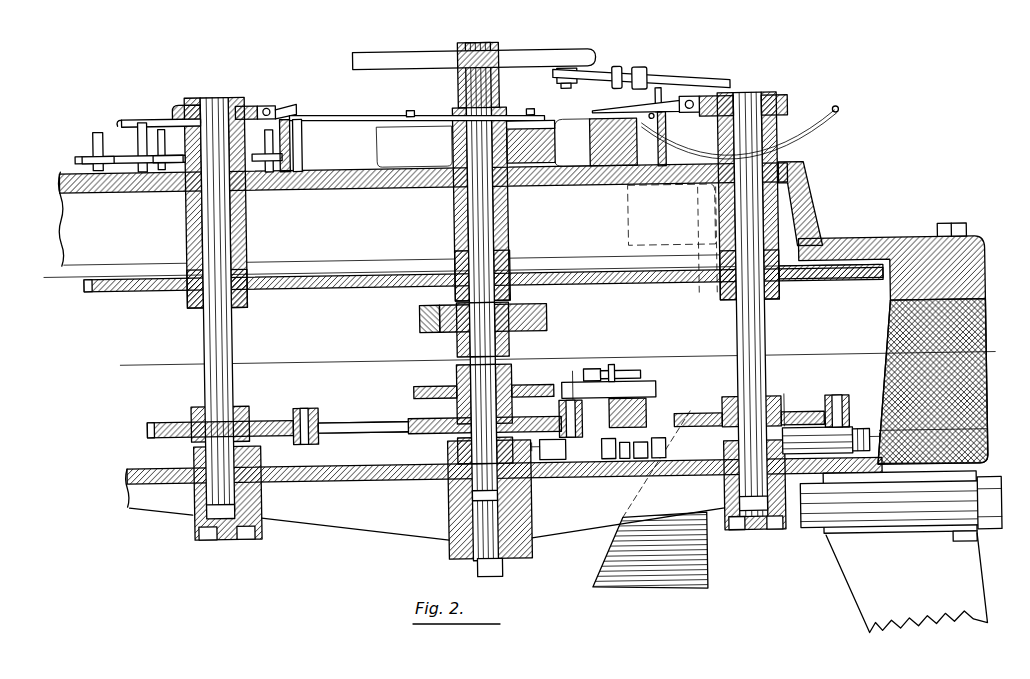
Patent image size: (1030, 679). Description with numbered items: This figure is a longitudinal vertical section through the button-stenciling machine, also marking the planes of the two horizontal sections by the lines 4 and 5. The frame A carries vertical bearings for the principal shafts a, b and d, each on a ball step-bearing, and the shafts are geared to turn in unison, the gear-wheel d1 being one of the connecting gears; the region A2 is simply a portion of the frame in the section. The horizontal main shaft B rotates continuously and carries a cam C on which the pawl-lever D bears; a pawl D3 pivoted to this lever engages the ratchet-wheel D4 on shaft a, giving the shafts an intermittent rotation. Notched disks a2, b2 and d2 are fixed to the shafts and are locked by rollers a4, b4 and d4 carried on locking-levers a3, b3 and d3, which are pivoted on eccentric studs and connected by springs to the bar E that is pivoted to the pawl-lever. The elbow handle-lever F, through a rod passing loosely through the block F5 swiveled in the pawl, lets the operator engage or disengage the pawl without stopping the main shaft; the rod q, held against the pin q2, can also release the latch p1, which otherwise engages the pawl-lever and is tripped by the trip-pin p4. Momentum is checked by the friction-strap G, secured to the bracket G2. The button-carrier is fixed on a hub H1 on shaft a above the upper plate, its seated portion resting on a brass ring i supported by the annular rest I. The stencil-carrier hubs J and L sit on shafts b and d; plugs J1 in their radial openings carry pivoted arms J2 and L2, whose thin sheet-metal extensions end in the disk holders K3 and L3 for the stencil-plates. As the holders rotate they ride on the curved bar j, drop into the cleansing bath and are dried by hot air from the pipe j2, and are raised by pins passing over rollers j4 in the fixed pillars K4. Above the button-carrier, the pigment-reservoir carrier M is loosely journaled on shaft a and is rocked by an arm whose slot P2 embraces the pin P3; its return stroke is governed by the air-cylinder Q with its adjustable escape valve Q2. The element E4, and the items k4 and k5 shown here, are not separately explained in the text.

The frame A is at (564, 351).
The housing A2 is at (423, 213).
The horizontal main shaft B is at (892, 545).
The cam C is at (703, 568).
The pawl-lever D is at (645, 400).
The pawl D3 is at (640, 383).
The ratchet-wheel D4 is at (484, 413).
The bar E is at (558, 449).
The lever pin E4 is at (591, 368).
The elbow handle-lever F is at (360, 421).
The block F5 is at (612, 366).
The friction-strap G is at (547, 318).
The bracket G2 is at (422, 312).
The hub H1 is at (531, 136).
The annular flange or rest I is at (593, 150).
The hub of stencil-carrier J is at (192, 90).
The plug J1 is at (250, 102).
The arm J2 is at (290, 103).
The disk holder K3 is at (340, 113).
The fixed pillar K4 is at (312, 150).
The hub of stencil-carrier L is at (784, 90).
The arm L2 is at (661, 90).
The disk holder L3 is at (635, 104).
The pigment-reservoir carrier M is at (474, 72).
The slot P2 is at (716, 70).
The pin P3 is at (565, 90).
The air-cylinder Q is at (784, 398).
The adjustable air-escape valve Q2 is at (948, 433).
The shaft a is at (497, 230).
The notched disk a2 is at (585, 286).
The locking-lever a3 is at (576, 372).
The roller a4 is at (580, 419).
The shaft b is at (236, 330).
The notched disk b2 is at (292, 286).
The locking-lever b3 is at (325, 396).
The roller b4 is at (330, 420).
The shaft d is at (769, 308).
The gear-wheel d1 is at (846, 284).
The notched disk d2 is at (798, 445).
The locking-lever d3 is at (848, 404).
The roller d4 is at (862, 418).
The brass ring i is at (415, 146).
The bar j is at (156, 118).
The pipe j2 is at (164, 142).
The roller j4 is at (293, 128).
The rod k4 is at (652, 139).
The shaft k5 is at (179, 150).
The pivoted latch p1 is at (656, 460).
The trip-pin p4 is at (604, 460).
The rod q is at (622, 460).
The pin q2 is at (636, 460).
The section line 4 is at (554, 355).
The section line 5 is at (872, 244).